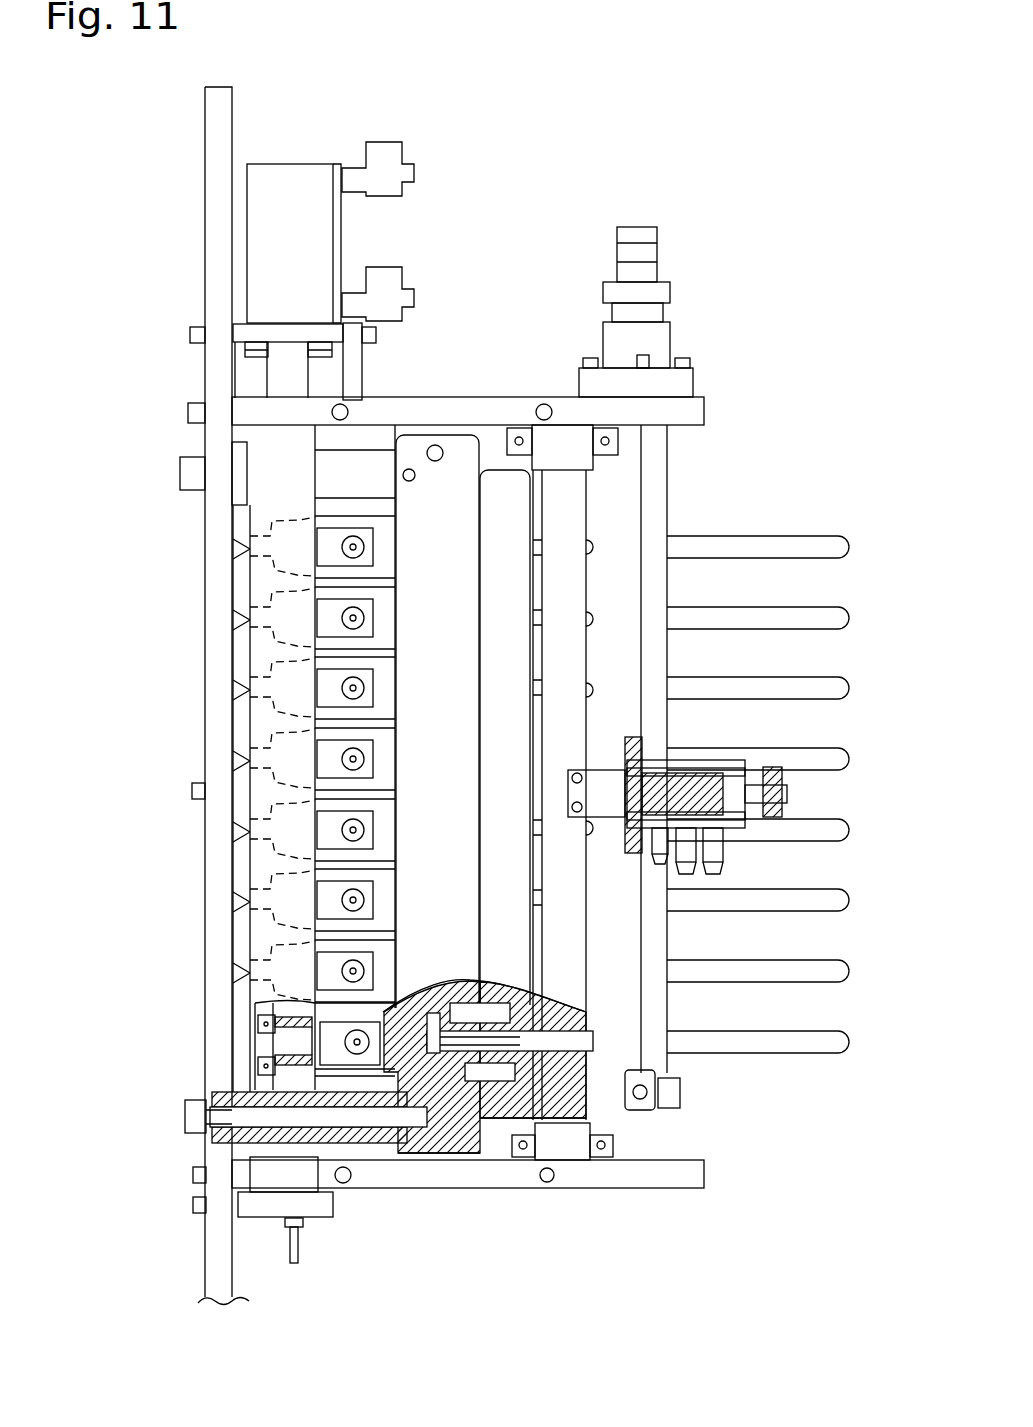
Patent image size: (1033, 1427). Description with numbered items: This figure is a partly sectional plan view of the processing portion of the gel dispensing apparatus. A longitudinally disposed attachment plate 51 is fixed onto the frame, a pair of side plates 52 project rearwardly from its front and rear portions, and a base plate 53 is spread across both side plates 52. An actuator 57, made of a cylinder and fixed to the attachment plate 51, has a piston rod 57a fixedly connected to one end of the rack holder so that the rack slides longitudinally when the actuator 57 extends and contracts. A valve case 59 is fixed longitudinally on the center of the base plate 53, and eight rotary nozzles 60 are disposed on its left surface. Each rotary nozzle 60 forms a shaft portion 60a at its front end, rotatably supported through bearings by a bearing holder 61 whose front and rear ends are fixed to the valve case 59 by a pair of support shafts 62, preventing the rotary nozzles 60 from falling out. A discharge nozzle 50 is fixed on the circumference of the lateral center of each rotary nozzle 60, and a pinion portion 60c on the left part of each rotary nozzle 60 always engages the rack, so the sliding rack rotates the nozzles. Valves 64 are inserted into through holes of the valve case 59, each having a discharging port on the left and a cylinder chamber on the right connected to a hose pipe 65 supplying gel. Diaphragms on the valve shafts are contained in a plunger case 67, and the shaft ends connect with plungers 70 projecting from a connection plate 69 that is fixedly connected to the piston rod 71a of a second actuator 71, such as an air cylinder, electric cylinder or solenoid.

The discharge nozzle 50 is at (370, 690).
The attachment plate 51 is at (216, 190).
The side plate 52 is at (695, 410).
The base plate 53 is at (567, 410).
The actuator 57 is at (299, 182).
The piston rod 57a is at (276, 375).
The valve case 59 is at (465, 445).
The rotary nozzle 60 is at (376, 708).
The shaft portion 60a is at (300, 1012).
The pinion portion 60c is at (262, 1072).
The bearing holder 61 is at (250, 940).
The support shaft 62 is at (372, 460).
The valve 64 is at (430, 1082).
The hose pipe 65 is at (836, 1042).
The plunger case 67 is at (505, 1130).
The connection plate 69 is at (572, 500).
The plunger 70 is at (538, 880).
The actuator 71 is at (705, 762).
The piston rod 71a is at (605, 780).